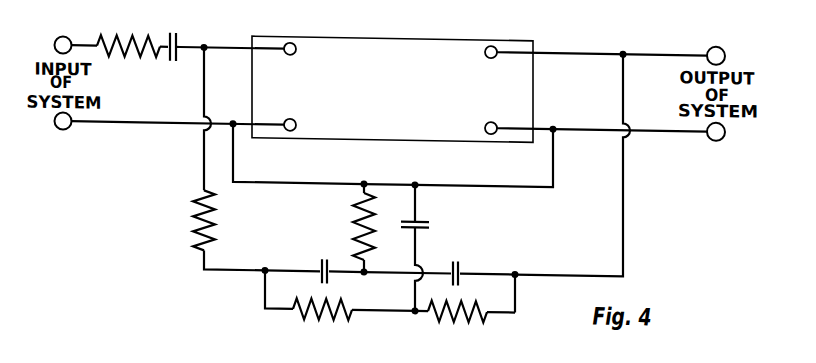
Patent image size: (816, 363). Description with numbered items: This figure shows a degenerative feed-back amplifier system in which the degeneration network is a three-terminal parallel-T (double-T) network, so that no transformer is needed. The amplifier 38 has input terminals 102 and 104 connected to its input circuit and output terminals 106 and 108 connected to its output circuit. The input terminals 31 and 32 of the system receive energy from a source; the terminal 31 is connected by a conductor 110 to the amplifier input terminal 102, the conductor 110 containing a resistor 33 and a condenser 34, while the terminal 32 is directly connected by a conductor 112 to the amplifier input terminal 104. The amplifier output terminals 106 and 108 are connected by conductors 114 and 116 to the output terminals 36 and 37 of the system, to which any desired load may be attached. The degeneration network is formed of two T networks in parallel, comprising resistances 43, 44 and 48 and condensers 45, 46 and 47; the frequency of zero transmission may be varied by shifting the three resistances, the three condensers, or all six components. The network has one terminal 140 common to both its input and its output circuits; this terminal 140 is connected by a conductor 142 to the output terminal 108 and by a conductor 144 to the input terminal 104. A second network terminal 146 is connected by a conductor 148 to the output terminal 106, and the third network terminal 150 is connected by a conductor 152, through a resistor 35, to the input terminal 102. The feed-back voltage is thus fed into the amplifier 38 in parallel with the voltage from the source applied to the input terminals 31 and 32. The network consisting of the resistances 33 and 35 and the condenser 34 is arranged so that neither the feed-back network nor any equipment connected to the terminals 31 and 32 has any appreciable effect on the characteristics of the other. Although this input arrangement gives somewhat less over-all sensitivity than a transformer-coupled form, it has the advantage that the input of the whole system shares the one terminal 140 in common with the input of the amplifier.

The input terminal of the system 31 is at (62, 38).
The input terminal of the system 32 is at (83, 127).
The resistor 33 is at (132, 36).
The condenser 34 is at (173, 37).
The resistor 35 is at (186, 149).
The output terminal of the system 36 is at (732, 49).
The output terminal of the system 37 is at (729, 138).
The amplifier 38 is at (375, 29).
The resistance 43 is at (464, 322).
The resistance 44 is at (354, 320).
The condenser 45 is at (428, 248).
The condenser 46 is at (439, 268).
The condenser 47 is at (316, 265).
The resistance 48 is at (348, 227).
The input terminal of the amplifier 102 is at (292, 38).
The input terminal of the amplifier 104 is at (297, 120).
The output terminal of the amplifier 106 is at (498, 35).
The output terminal of the amplifier 108 is at (498, 120).
The conductor 110 is at (193, 42).
The conductor 112 is at (143, 121).
The conductor 114 is at (597, 42).
The conductor 116 is at (583, 118).
The common terminal of the network 140 is at (390, 176).
The conductor 142 is at (490, 177).
The conductor 144 is at (295, 177).
The terminal of the network 146 is at (517, 264).
The conductor 148 is at (622, 211).
The terminal of the network 150 is at (258, 269).
The conductor 152 is at (203, 255).